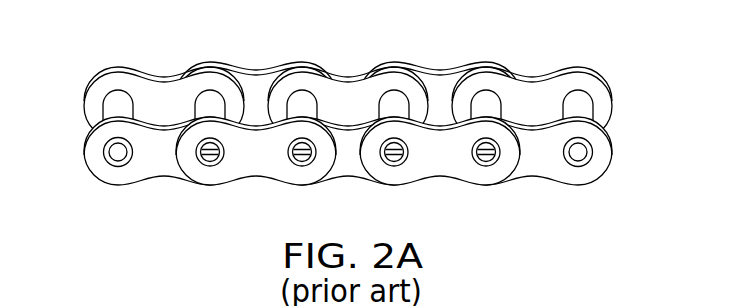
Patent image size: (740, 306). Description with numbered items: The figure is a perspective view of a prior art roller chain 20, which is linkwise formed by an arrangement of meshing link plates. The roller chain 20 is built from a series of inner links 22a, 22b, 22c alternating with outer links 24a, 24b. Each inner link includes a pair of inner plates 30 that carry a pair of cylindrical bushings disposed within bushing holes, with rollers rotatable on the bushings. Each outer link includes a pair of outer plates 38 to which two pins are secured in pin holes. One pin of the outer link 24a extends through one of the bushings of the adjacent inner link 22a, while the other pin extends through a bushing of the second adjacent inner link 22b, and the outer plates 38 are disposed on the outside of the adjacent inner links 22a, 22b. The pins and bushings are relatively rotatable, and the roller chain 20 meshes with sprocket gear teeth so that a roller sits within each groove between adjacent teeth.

The roller chain 20 is at (380, 132).
The inner link 22a is at (230, 191).
The inner link 22b is at (417, 191).
The inner link 22c is at (605, 191).
The outer link 24a is at (322, 57).
The outer link 24b is at (507, 57).
The inner plates 30 is at (169, 160).
The outer plates 38 is at (268, 165).